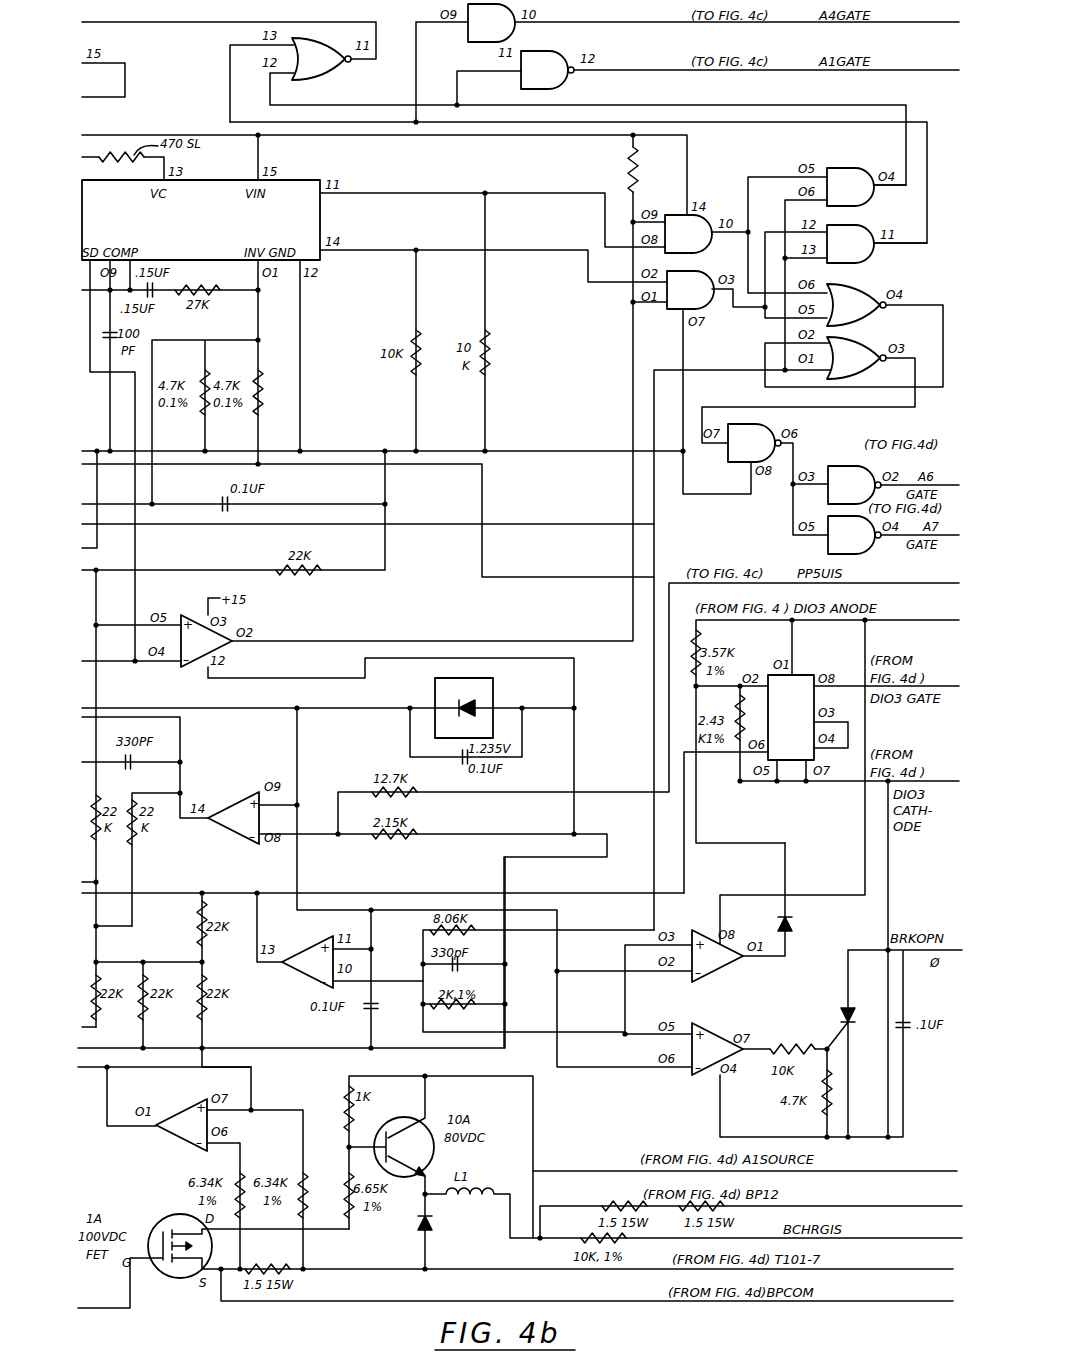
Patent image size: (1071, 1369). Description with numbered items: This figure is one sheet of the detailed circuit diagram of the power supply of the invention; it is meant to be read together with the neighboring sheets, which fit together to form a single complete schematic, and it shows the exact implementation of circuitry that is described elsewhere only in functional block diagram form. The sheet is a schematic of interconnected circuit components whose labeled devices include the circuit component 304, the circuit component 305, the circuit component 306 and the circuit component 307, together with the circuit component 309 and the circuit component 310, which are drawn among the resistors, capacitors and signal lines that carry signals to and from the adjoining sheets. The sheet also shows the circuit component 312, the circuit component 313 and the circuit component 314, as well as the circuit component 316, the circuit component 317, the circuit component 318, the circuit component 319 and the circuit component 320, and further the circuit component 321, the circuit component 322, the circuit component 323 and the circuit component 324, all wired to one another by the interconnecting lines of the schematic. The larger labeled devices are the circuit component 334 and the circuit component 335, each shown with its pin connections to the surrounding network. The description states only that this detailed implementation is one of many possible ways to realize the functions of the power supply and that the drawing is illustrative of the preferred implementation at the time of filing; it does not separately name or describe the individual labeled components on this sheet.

The operational amplifier 304 is at (211, 651).
The operational amplifier 305 is at (249, 826).
The operational amplifier 306 is at (323, 970).
The operational amplifier 307 is at (197, 1133).
The comparator 309 is at (725, 965).
The comparator 310 is at (725, 1058).
The NOR gate 312 is at (331, 68).
The NOR gate 313 is at (866, 313).
The NOR gate 314 is at (866, 366).
The AND gate 316 is at (503, 32).
The NAND gate 317 is at (556, 79).
The NAND gate 318 is at (761, 451).
The NAND gate 319 is at (861, 493).
The NAND gate 320 is at (861, 543).
The AND gate 321 is at (699, 243).
The AND gate 322 is at (701, 299).
The AND gate 323 is at (860, 196).
The AND gate 324 is at (860, 253).
The switching regulator control circuit 334 is at (151, 233).
The optically coupled isolator 335 is at (803, 719).